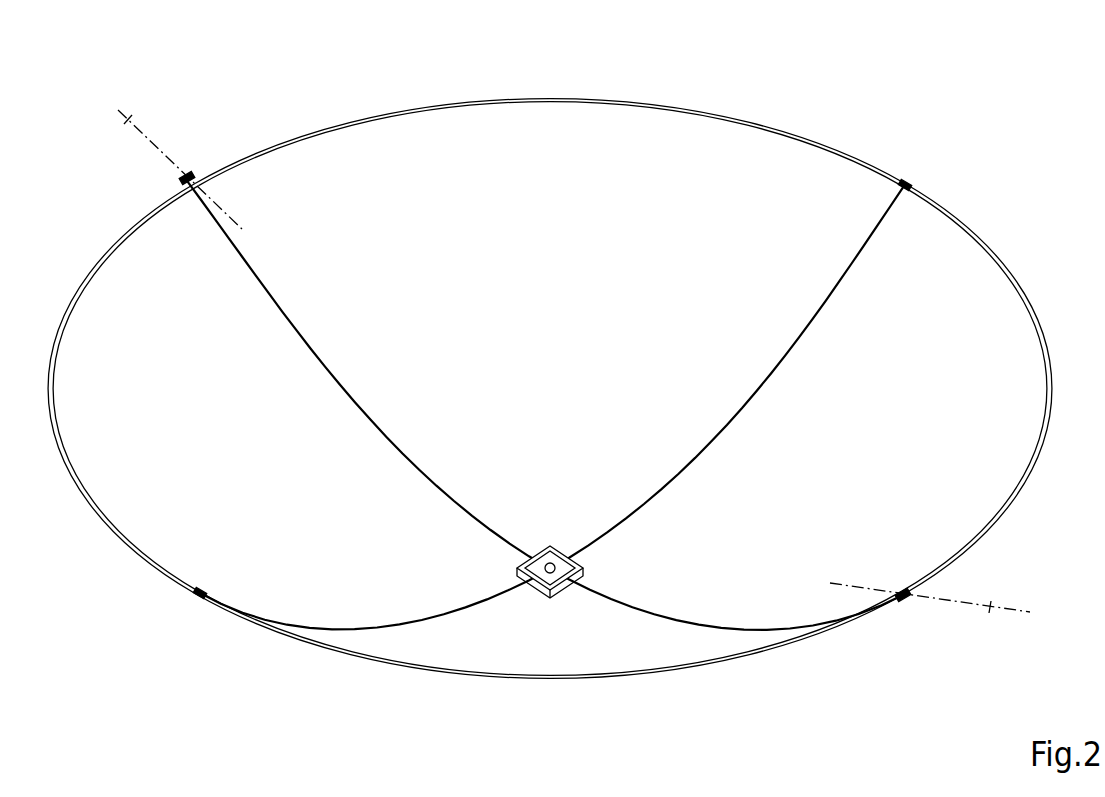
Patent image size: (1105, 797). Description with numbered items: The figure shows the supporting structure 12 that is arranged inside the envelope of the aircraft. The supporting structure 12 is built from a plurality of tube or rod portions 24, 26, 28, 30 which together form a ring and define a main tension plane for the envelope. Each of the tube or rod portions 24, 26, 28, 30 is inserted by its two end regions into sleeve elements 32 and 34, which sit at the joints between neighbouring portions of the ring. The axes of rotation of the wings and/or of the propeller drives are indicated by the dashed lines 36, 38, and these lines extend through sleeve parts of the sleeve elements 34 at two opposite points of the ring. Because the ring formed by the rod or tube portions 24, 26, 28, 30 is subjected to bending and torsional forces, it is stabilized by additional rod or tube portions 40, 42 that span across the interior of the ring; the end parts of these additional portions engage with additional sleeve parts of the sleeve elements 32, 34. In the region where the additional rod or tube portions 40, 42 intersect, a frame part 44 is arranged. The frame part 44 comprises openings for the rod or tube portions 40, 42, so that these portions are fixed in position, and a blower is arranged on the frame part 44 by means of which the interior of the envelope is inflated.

The supporting structure 12 is at (866, 122).
The tube or rod portion 24 is at (585, 98).
The tube or rod portion 26 is at (1037, 318).
The tube or rod portion 28 is at (608, 677).
The tube or rod portion 30 is at (106, 253).
The sleeve element 32 is at (907, 186).
The sleeve element 34 is at (196, 176).
The dashed line 36 is at (990, 613).
The dashed line 38 is at (132, 115).
The additional rod or tube portion 40 is at (790, 353).
The additional rod or tube portion 42 is at (362, 405).
The frame part 44 is at (578, 572).